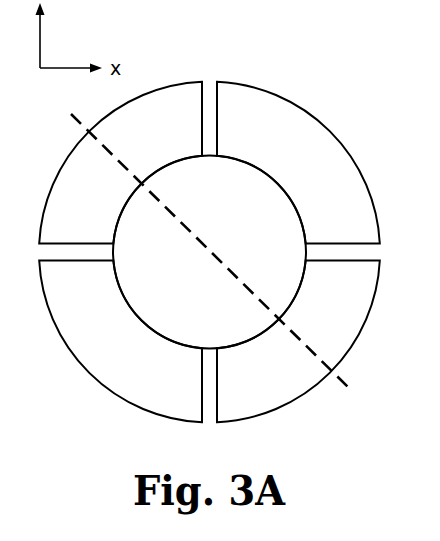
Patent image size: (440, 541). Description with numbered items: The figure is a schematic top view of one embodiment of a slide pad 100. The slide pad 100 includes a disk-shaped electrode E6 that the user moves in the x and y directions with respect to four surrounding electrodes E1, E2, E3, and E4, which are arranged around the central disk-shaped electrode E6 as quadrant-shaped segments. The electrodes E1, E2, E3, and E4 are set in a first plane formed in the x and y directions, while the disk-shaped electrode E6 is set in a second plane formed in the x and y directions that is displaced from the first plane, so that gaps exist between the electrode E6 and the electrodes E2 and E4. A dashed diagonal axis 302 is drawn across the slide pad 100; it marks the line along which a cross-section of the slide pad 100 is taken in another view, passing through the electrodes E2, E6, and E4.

The slide pad 100 is at (112, 421).
The electrode E1 is at (347, 152).
The electrode E2 is at (81, 142).
The electrode E3 is at (85, 365).
The electrode E4 is at (357, 337).
The disk-shaped electrode E6 is at (304, 223).
The axis 302 is at (331, 374).